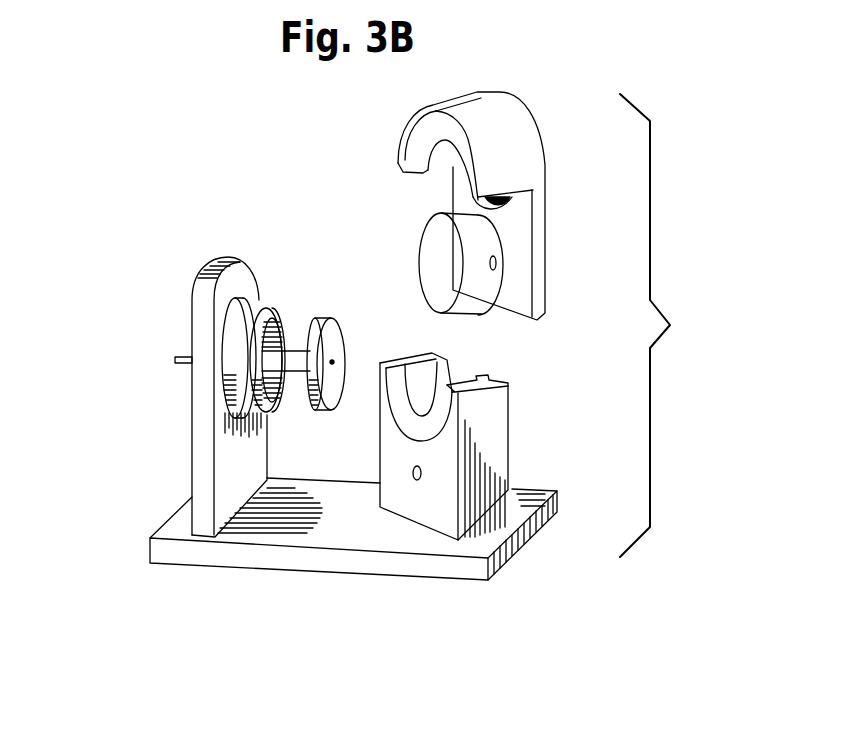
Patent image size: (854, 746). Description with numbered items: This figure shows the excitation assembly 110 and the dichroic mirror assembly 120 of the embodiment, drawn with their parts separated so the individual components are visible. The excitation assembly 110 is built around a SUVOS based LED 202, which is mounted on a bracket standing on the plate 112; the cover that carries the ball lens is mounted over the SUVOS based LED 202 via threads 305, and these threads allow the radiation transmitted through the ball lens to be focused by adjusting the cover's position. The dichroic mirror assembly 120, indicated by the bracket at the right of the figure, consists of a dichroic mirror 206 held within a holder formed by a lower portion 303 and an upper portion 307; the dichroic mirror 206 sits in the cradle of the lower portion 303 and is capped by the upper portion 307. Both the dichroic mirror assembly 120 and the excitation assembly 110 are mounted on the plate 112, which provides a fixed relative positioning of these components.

The excitation assembly 110 is at (152, 265).
The plate 112 is at (247, 558).
The dichroic mirror assembly 120 is at (672, 325).
The SUVOS based LED 202 is at (336, 355).
The dichroic mirror 206 is at (480, 313).
The lower portion 303 is at (495, 430).
The threads 305 is at (263, 298).
The upper portion 307 is at (544, 241).